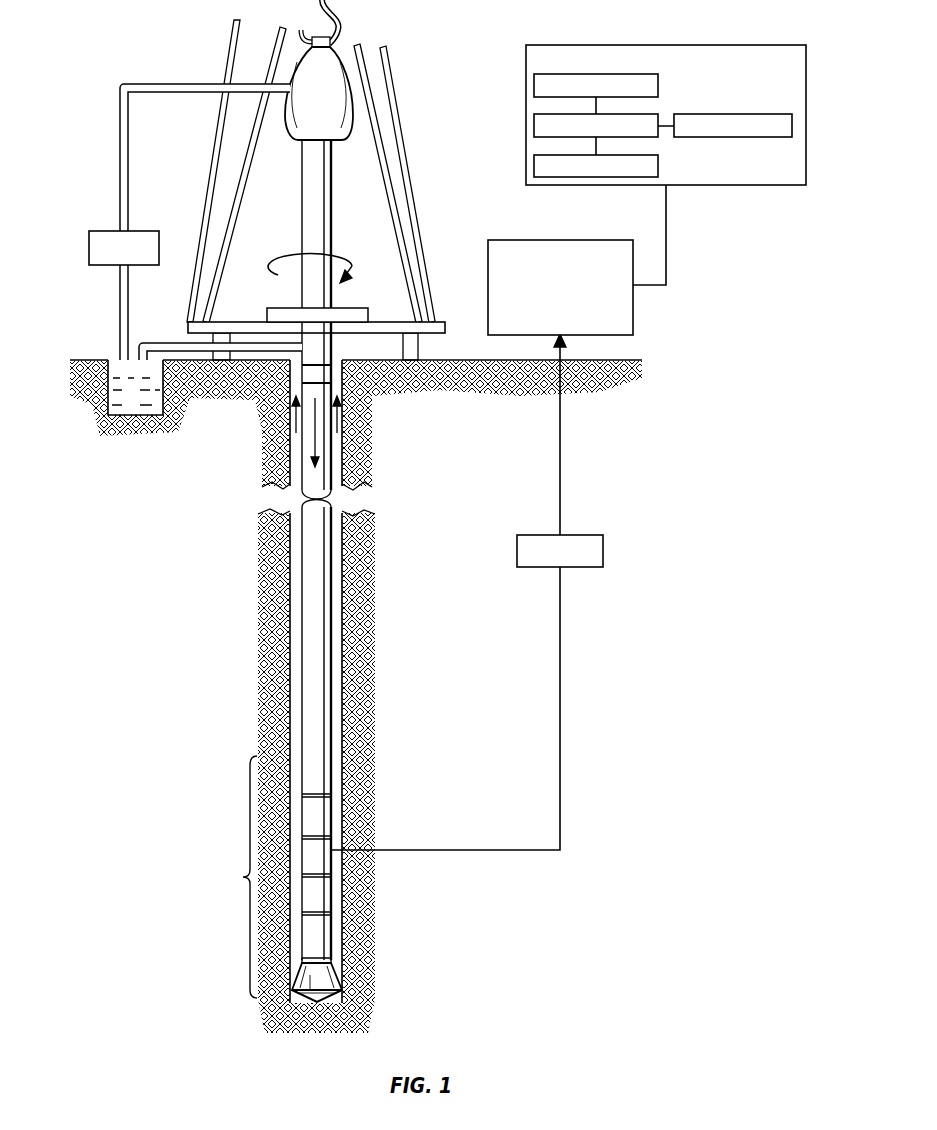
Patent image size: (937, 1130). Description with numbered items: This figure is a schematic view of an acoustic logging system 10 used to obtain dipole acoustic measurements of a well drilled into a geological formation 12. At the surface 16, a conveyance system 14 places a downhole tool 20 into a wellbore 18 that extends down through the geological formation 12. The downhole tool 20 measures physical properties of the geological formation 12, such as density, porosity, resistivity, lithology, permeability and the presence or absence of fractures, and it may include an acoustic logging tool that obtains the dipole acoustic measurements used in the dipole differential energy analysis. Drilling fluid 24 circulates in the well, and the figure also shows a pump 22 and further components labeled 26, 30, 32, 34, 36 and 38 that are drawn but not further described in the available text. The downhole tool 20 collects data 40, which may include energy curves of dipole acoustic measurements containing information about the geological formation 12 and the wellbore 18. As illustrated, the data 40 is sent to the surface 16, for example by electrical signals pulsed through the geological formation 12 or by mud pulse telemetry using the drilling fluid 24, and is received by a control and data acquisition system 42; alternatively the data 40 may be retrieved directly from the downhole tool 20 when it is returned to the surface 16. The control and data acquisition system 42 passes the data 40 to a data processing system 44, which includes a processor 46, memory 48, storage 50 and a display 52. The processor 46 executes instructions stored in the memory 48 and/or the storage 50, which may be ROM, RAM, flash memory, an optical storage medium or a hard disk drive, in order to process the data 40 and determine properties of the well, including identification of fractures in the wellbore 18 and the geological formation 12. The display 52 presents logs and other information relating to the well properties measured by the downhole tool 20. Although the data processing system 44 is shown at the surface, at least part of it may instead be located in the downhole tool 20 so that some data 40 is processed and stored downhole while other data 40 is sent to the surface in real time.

The acoustic logging system 10 is at (463, 43).
The geological formation 12 is at (478, 674).
The wireline conveyance system 14 is at (420, 102).
The surface 16 is at (480, 355).
The wellbore 18 is at (314, 360).
The downhole tool 20 is at (320, 982).
The mud pump 22 is at (88, 246).
The drilling fluid 24 is at (296, 432).
The wellbore 26 is at (290, 688).
The drill string 30 is at (338, 360).
The mud pit 32 is at (142, 417).
The bottom hole assembly 34 is at (246, 877).
The drill collar / tool 36 is at (322, 805).
The downhole tool 38 is at (322, 895).
The data 40 is at (592, 536).
The control and data acquisition system 42 is at (606, 240).
The data processing system 44 is at (668, 45).
The processor 46 is at (646, 113).
The memory 48 is at (534, 82).
The storage 50 is at (658, 165).
The display 52 is at (735, 114).